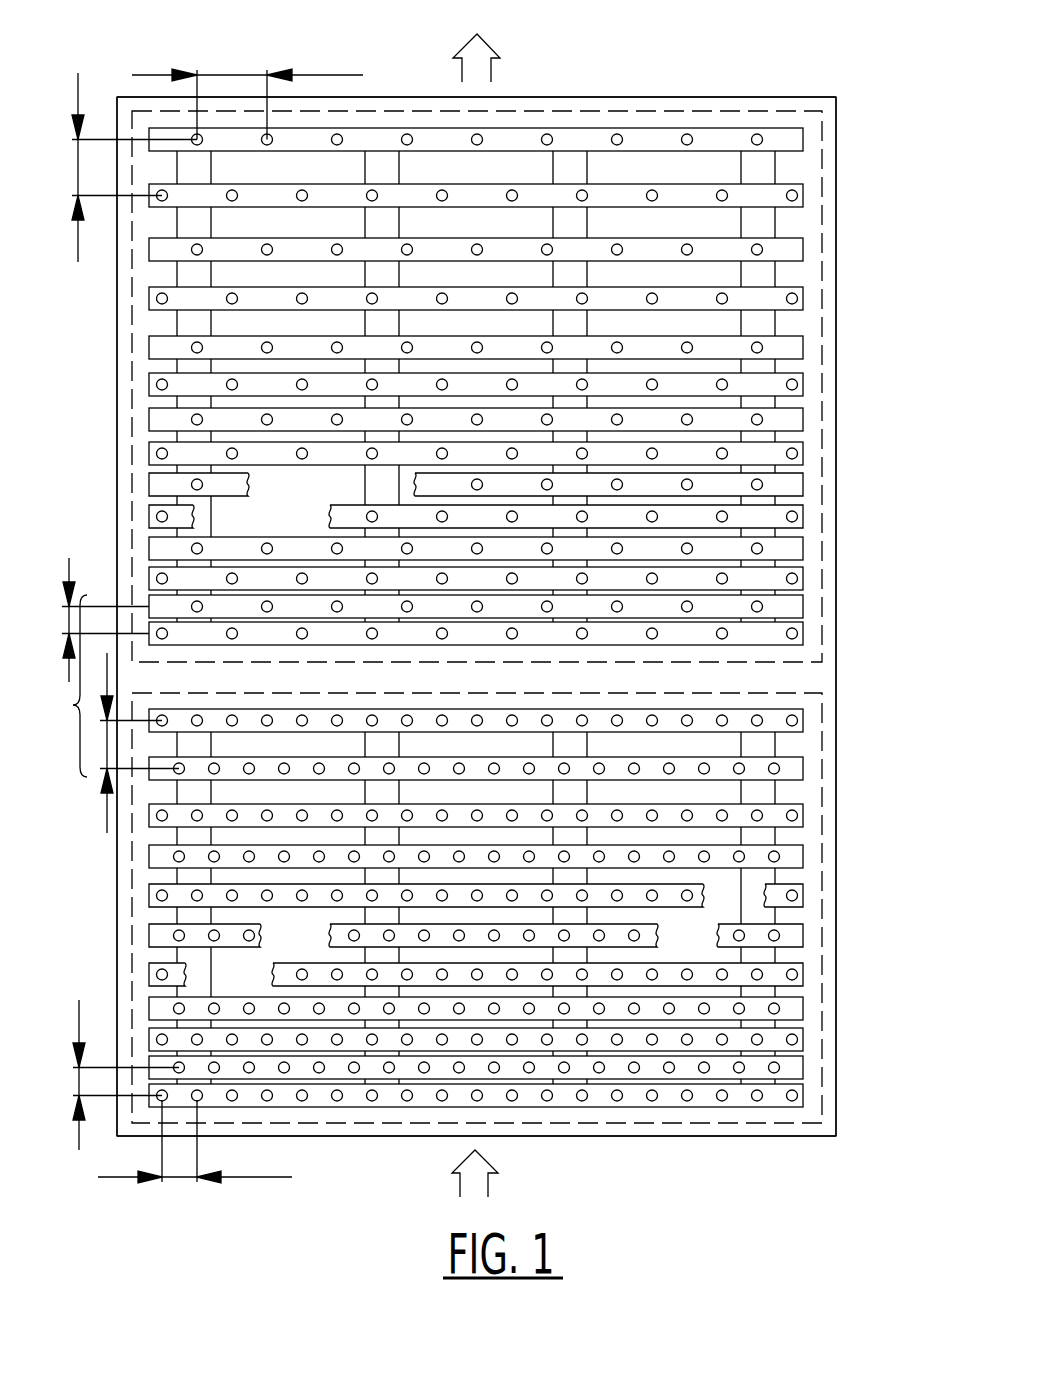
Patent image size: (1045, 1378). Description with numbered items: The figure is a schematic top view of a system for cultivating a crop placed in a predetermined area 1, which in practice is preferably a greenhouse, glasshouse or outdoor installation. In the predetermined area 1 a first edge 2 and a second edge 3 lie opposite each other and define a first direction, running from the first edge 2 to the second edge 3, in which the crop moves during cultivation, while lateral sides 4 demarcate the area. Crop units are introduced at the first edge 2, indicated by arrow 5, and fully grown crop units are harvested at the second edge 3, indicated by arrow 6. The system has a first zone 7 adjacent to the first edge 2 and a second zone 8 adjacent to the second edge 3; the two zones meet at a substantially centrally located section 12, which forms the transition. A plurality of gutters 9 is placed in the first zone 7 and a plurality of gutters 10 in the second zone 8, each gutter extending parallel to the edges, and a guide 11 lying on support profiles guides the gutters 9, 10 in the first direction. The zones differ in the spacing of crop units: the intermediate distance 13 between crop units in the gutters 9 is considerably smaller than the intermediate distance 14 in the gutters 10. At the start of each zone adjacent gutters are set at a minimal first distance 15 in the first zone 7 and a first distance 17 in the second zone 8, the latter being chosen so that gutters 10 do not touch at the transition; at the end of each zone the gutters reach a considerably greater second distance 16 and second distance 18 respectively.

The predetermined area 1 is at (836, 258).
The first edge 2 is at (727, 1137).
The second edge 3 is at (760, 97).
The lateral sides 4 is at (118, 523).
The arrow 5 is at (483, 1180).
The arrow 6 is at (482, 49).
The first zone 7 is at (822, 918).
The second zone 8 is at (822, 323).
The gutters 9 is at (795, 815).
The gutters 10 is at (803, 143).
The guide 11 is at (372, 492).
The centrally located section 12 is at (66, 686).
The intermediate distance 13 is at (195, 1141).
The intermediate distance 14 is at (247, 93).
The first distance 15 is at (112, 1075).
The second distance 16 is at (131, 743).
The first distance 17 is at (96, 620).
The second distance 18 is at (123, 167).